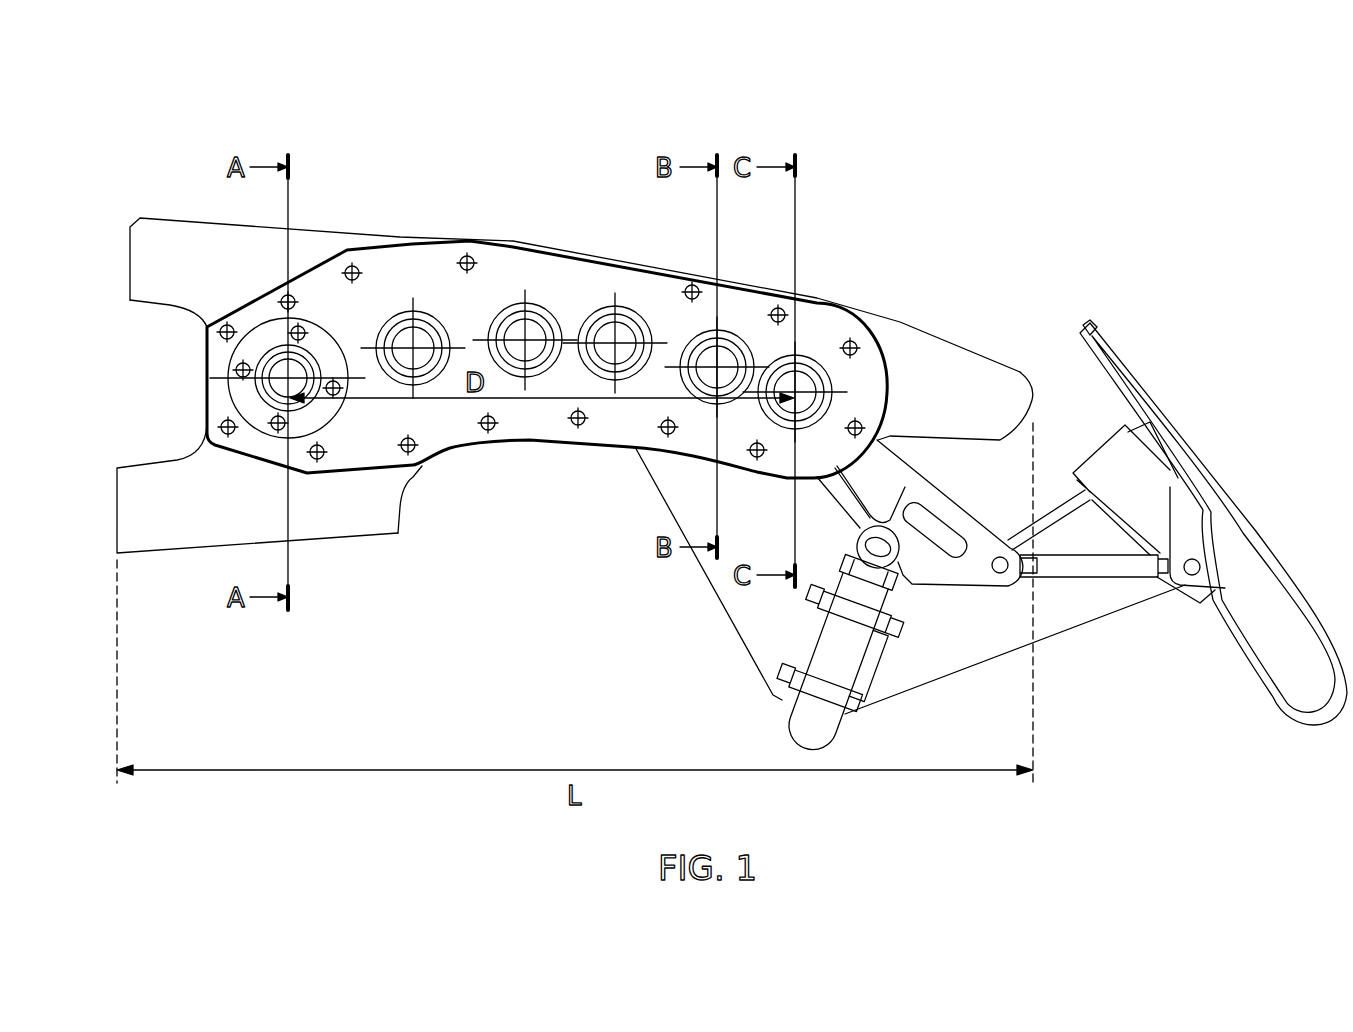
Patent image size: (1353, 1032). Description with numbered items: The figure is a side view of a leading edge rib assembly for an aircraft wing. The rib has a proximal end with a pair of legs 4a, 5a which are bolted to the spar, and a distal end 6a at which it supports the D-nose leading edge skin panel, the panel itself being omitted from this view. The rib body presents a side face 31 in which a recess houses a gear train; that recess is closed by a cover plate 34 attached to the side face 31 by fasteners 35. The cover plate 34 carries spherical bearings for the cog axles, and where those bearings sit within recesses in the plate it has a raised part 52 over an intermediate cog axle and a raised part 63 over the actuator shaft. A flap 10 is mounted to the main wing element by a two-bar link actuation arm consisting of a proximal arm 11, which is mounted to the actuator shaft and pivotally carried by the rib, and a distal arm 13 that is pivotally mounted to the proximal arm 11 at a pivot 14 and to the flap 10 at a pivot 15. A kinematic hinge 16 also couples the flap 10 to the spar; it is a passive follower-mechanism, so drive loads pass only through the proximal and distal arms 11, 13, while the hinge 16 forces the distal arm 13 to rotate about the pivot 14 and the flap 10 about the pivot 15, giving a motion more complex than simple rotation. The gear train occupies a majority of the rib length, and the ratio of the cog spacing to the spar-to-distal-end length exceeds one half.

The leg 4a is at (140, 262).
The leg 5a is at (125, 522).
The distal end 6a is at (968, 343).
The flap 10 is at (1275, 710).
The proximal arm 11 is at (953, 507).
The distal arm 13 is at (1092, 567).
The pivot 14 is at (1000, 573).
The pivot 15 is at (1192, 558).
The kinematic hinge 16 is at (750, 702).
The side face 31 is at (387, 488).
The cover plate 34 is at (530, 423).
The fasteners 35 is at (578, 425).
The raised part 52 is at (717, 365).
The raised part 63 is at (796, 385).